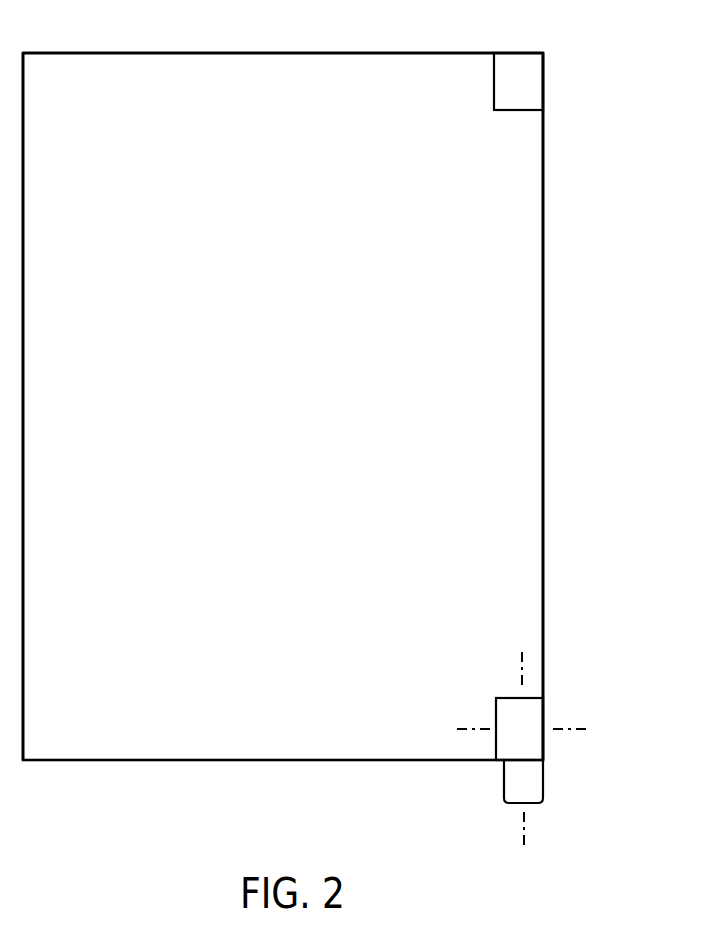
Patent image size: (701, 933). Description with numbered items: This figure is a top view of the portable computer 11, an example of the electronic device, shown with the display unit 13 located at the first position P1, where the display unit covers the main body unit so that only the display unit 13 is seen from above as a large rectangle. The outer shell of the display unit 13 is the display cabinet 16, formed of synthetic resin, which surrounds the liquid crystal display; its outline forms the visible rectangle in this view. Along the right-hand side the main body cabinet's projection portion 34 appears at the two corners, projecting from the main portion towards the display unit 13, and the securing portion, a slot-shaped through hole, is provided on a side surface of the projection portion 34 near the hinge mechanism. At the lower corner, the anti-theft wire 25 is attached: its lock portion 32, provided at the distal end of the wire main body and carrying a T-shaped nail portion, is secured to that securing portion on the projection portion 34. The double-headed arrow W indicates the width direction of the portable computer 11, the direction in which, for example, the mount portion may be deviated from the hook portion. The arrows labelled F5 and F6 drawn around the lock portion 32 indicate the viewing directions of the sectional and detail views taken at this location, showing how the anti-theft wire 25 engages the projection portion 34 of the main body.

The portable computer 11 is at (598, 65).
The display unit 13 is at (394, 80).
The display cabinet 16 is at (268, 62).
The first position P1 is at (583, 190).
The projection portion 34 is at (535, 98).
The lock portion 32 is at (537, 786).
The anti-theft wire 25 is at (582, 816).
The width direction W is at (588, 292).
The direction of F5 view / force F5 is at (457, 729).
The direction of F6 view / force F6 is at (522, 652).